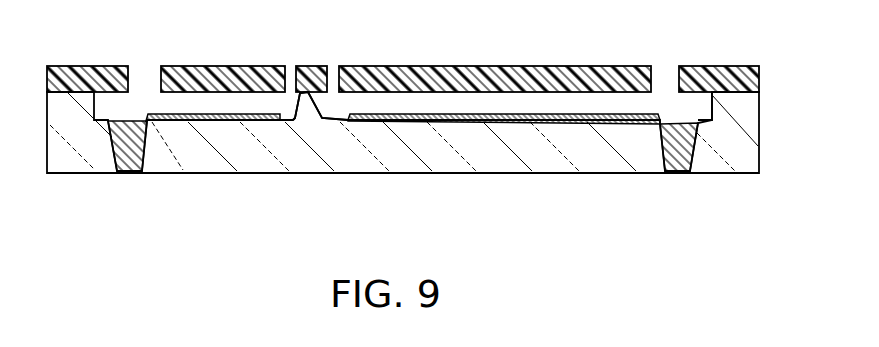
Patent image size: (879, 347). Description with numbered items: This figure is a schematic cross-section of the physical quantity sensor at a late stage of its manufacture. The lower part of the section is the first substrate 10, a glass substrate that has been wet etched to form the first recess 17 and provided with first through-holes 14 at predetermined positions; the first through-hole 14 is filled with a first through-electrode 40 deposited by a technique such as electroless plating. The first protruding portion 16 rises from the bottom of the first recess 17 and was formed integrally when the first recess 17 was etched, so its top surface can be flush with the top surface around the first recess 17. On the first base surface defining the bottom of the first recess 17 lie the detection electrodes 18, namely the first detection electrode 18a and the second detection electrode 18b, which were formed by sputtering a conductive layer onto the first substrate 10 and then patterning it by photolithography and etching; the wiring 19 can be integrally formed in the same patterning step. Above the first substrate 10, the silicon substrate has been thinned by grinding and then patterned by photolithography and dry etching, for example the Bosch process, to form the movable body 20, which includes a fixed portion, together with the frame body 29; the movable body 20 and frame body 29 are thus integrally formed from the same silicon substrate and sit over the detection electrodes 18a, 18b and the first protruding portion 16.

The first substrate 10 is at (588, 153).
The first through-hole 14 is at (128, 171).
The first protruding portion 16 is at (312, 105).
The first recess 17 is at (713, 119).
The detection electrode 18 is at (403, 175).
The first detection electrode 18a is at (380, 121).
The second detection electrode 18b is at (235, 121).
The wiring 19 is at (163, 123).
The movable body 20 is at (456, 50).
The frame body 29 is at (65, 70).
The first through-electrode 40 is at (137, 172).